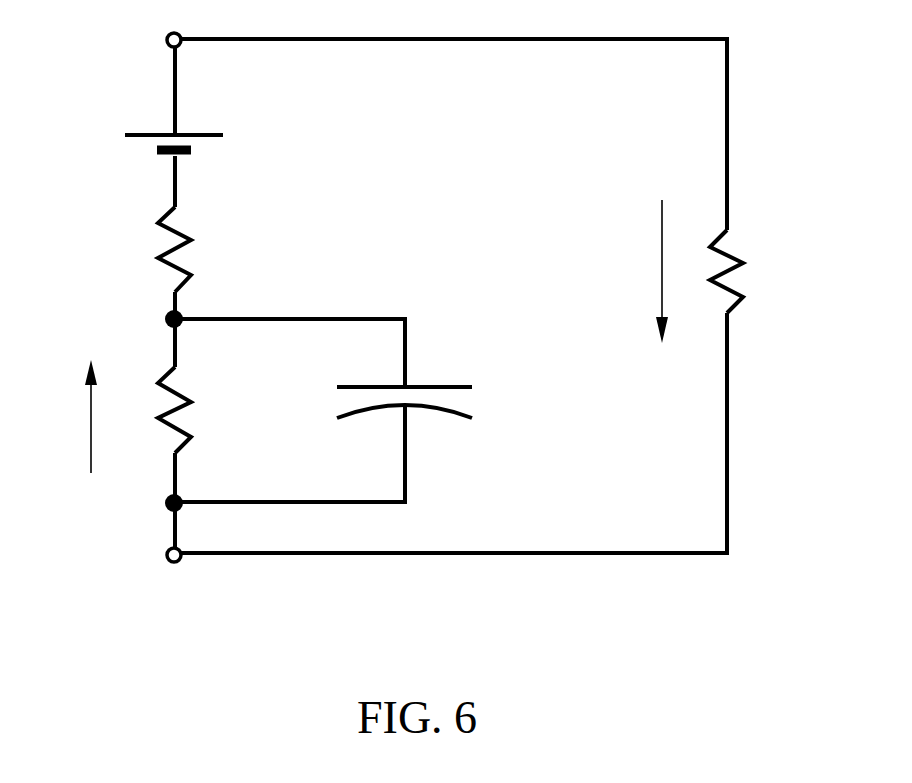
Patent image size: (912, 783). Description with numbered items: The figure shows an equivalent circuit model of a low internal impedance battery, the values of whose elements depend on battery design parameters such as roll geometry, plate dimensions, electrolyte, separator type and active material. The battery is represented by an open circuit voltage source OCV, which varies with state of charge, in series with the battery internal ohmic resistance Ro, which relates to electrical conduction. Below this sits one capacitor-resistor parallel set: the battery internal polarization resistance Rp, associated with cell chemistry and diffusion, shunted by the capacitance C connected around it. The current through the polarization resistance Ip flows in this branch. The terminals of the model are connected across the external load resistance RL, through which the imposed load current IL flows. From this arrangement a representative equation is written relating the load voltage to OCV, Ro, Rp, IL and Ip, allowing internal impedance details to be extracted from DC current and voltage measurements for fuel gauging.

The open circuit voltage OCV is at (230, 146).
The battery internal ohmic resistance Ro is at (225, 249).
The battery internal polarization resistance Rp is at (226, 410).
The shunt capacitance C is at (487, 410).
The external load resistance RL is at (789, 271).
The imposed load current IL is at (630, 271).
The current through the polarization resistance Ip is at (57, 416).